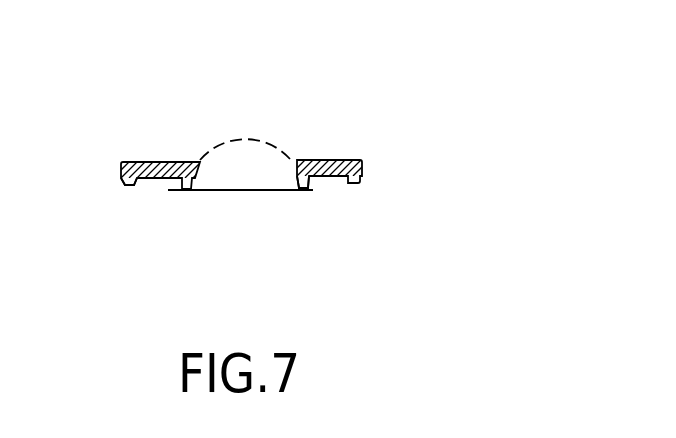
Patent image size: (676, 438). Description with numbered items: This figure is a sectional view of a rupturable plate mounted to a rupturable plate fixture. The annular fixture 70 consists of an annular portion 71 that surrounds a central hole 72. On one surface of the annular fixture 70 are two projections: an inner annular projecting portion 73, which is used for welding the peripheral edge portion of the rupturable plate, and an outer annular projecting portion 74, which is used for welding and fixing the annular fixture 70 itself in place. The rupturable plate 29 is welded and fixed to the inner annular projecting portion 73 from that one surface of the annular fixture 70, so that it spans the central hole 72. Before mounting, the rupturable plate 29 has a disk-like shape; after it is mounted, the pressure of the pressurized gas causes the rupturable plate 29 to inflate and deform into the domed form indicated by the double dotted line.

The annular fixture 70 is at (323, 157).
The annular portion 71 is at (150, 162).
The central hole 72 is at (195, 160).
The inner annular projecting portion 73 is at (310, 183).
The outer annular projecting portion 74 is at (124, 185).
The rupturable plate 29 is at (213, 190).